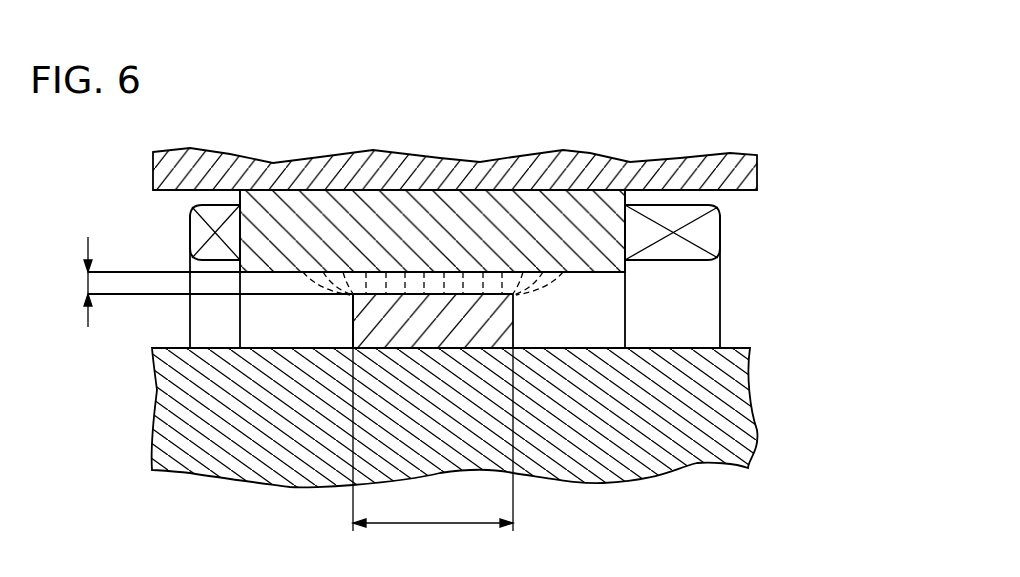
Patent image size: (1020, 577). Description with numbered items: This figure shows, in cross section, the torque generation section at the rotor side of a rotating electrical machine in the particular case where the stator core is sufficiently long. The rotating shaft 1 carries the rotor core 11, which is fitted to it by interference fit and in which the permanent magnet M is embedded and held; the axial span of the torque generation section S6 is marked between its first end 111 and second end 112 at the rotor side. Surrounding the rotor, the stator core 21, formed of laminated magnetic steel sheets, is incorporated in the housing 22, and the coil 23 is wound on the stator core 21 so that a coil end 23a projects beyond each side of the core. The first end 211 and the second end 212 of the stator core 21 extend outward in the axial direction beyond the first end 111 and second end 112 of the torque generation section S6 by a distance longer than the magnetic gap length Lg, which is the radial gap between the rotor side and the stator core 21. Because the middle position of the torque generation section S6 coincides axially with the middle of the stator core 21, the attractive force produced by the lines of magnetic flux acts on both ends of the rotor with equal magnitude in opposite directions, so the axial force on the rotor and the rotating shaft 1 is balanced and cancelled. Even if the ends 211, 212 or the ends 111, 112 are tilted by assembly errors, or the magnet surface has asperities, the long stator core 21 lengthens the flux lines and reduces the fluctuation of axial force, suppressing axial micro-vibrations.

The rotating shaft 1 is at (737, 400).
The rotor core 11 is at (513, 332).
The first end of the torque generation section 111 is at (352, 331).
The second end of the torque generation section 112 is at (513, 308).
The stator core 21 is at (460, 208).
The first end of the stator core 211 is at (238, 263).
The second end of the stator core 212 is at (636, 262).
The housing 22 is at (740, 167).
The coil 23 is at (190, 257).
The coil end 23a is at (190, 223).
The magnetic gap length Lg is at (338, 282).
The torque generation section S6 is at (433, 439).